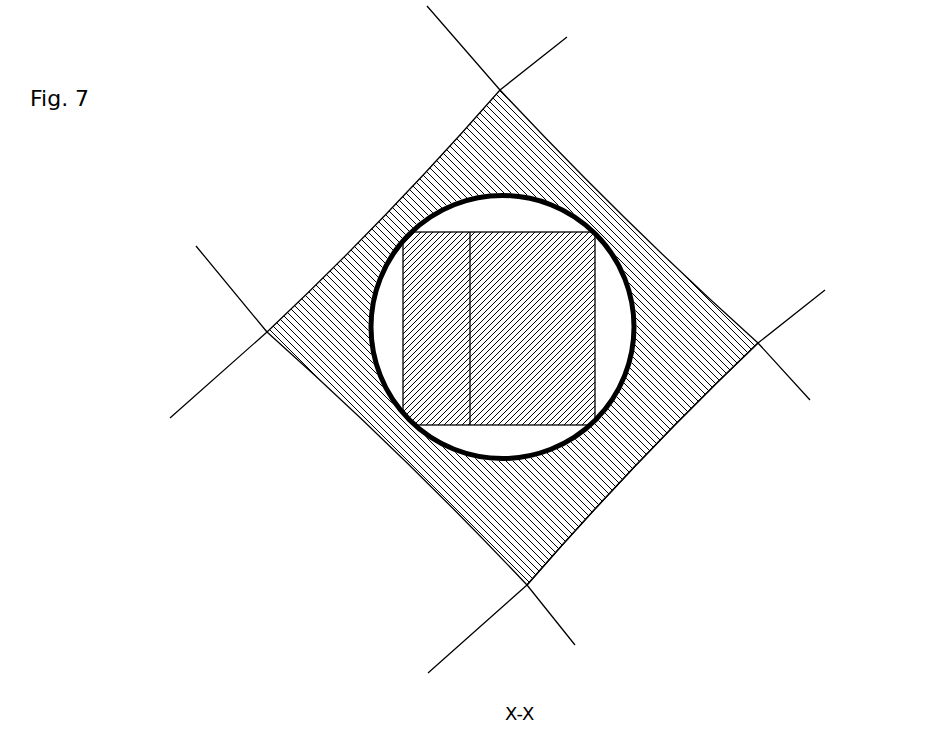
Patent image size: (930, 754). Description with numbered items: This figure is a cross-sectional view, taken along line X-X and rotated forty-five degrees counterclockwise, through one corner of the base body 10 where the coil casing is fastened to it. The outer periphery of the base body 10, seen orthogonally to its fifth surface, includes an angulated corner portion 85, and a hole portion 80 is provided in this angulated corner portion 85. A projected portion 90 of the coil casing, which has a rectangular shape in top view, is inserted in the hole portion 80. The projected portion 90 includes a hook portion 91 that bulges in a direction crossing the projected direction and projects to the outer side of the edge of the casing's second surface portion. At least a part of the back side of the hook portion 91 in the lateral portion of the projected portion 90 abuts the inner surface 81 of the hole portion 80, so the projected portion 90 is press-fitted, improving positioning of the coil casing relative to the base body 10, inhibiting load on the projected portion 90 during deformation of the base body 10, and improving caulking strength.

The base body 10 is at (593, 515).
The hole portion 80 is at (455, 142).
The inner surface of the hole portion 81 is at (423, 160).
The angulated corner portion 85 is at (588, 173).
The projected portion 90 is at (650, 455).
The hook portion 91 is at (640, 470).